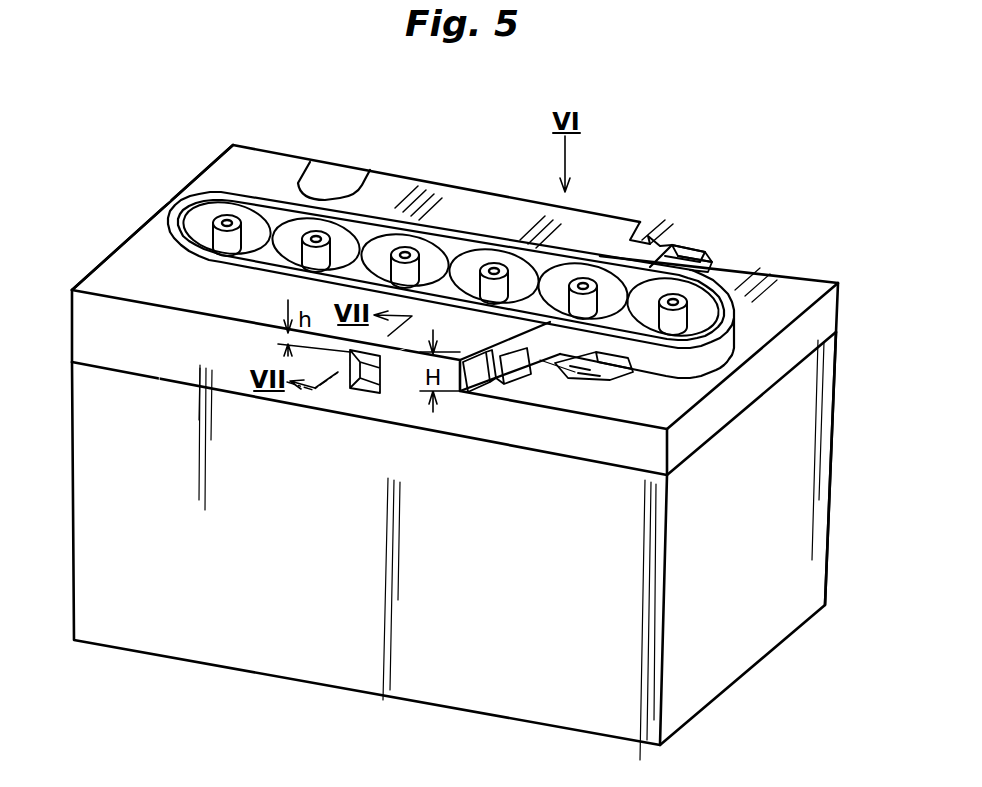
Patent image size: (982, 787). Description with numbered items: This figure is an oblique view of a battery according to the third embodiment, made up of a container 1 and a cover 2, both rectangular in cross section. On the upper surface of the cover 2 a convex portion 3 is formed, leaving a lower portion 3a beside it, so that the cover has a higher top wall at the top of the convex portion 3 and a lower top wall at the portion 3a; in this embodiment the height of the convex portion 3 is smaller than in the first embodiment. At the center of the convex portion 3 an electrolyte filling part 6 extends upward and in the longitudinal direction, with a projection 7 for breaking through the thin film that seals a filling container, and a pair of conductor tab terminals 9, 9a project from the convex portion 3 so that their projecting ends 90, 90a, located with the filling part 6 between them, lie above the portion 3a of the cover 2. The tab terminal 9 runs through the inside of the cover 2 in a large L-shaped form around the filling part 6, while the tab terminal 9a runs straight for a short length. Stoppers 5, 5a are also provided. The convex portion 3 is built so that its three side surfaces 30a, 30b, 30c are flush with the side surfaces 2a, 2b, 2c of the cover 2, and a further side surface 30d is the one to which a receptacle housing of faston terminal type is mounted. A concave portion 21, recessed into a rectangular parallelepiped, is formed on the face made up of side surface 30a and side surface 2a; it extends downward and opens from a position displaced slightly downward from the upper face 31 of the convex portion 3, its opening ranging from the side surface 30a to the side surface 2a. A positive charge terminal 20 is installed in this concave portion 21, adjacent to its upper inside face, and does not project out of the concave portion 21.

The container 1 is at (732, 642).
The cover 2 is at (772, 300).
The side surface of the cover 2a is at (177, 362).
The side surface of the cover 2b is at (110, 247).
The side surface of the cover 2c is at (296, 160).
The convex portion 3 is at (593, 243).
The portion 3a is at (652, 407).
The stopper 5 is at (650, 240).
The stopper 5a is at (487, 377).
The filling part 6 is at (457, 222).
The projection 7 is at (496, 262).
The tab terminal 9 is at (687, 255).
The tab terminal 9a is at (573, 377).
The positive charge terminal 20 is at (360, 390).
The concave portion 21 is at (353, 407).
The side surface of the convex portion 30a is at (175, 323).
The side surface of the convex portion 30b is at (157, 210).
The side surface of the convex portion 30c is at (394, 178).
The side surface of the convex portion 30d is at (635, 227).
The upper face of the convex portion 31 is at (417, 335).
The projecting end of the tab terminal 90 is at (695, 272).
The projecting end of the tab terminal 90a is at (600, 382).